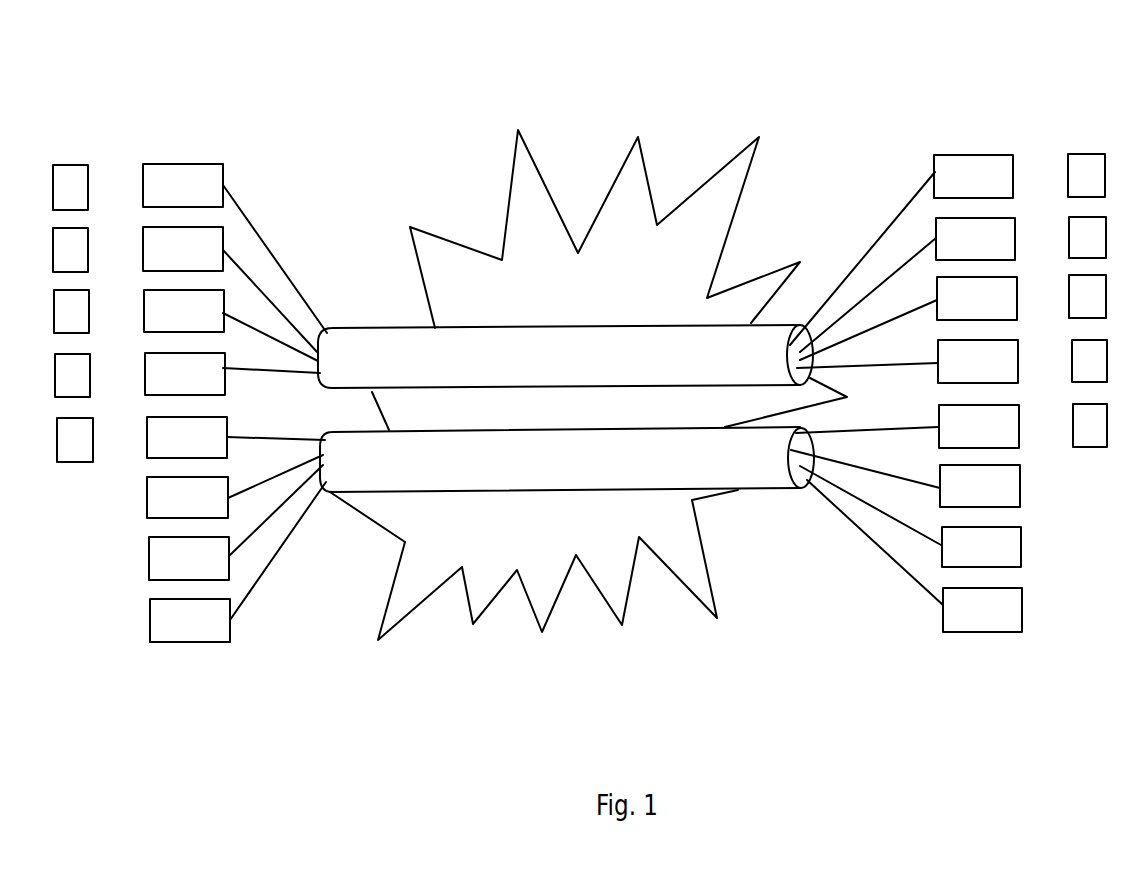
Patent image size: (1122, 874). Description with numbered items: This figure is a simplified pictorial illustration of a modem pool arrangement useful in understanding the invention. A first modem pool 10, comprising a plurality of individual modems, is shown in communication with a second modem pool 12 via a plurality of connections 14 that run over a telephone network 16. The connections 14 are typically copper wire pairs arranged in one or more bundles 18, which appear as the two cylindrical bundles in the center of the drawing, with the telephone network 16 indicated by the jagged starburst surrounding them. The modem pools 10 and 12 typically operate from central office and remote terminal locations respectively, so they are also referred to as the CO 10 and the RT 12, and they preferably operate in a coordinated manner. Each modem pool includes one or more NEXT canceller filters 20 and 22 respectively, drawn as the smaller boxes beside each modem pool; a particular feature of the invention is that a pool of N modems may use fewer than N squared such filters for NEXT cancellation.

The first modem pool 10 is at (190, 114).
The second modem pool 12 is at (945, 99).
The connections 14 is at (268, 253).
The telephone network 16 is at (520, 185).
The bundles 18 is at (757, 475).
The NEXT canceller filters 20 is at (80, 116).
The NEXT canceller filters 22 is at (1065, 99).